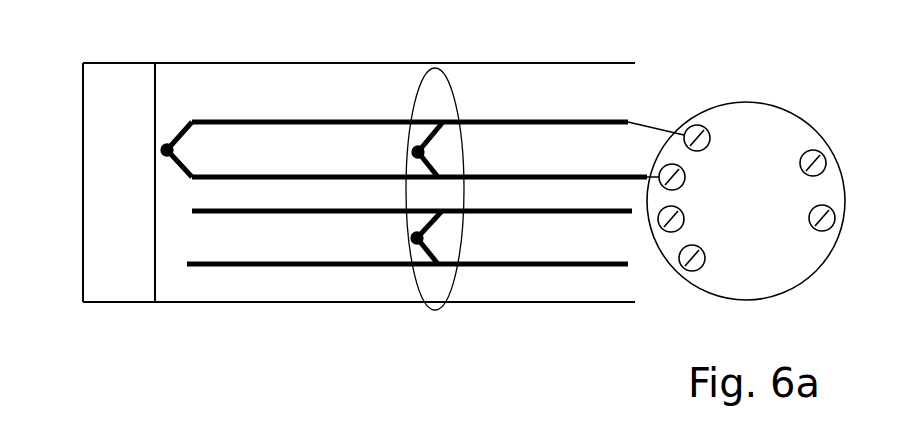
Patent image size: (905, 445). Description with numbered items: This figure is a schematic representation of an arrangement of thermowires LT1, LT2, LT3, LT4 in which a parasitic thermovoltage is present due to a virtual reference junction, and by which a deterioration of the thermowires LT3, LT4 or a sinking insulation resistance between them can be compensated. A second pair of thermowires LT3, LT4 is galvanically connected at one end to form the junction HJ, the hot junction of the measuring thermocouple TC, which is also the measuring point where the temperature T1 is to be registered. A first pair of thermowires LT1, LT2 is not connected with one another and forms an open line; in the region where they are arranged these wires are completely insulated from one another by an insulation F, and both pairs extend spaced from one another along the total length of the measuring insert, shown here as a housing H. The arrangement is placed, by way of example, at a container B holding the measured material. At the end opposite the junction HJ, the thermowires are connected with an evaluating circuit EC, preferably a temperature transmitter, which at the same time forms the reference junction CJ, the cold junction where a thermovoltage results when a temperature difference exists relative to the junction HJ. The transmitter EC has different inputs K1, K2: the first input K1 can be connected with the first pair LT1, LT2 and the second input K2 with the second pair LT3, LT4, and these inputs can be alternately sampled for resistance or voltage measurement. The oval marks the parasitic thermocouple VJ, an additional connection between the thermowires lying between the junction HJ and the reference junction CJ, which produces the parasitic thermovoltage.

The temperature T1 is at (112, 189).
The container B is at (122, 302).
The housing H is at (220, 302).
The insulation F is at (295, 306).
The junction HJ is at (172, 126).
The thermocouple TC is at (353, 104).
The parasitic thermocouple VJ is at (435, 101).
The thermowire LT1 is at (585, 213).
The thermowire LT2 is at (513, 267).
The thermowire LT3 is at (513, 122).
The thermowire LT4 is at (583, 177).
The reference junction CJ is at (652, 153).
The first input K1 is at (670, 261).
The second input K2 is at (724, 153).
The evaluating circuit EC is at (787, 138).